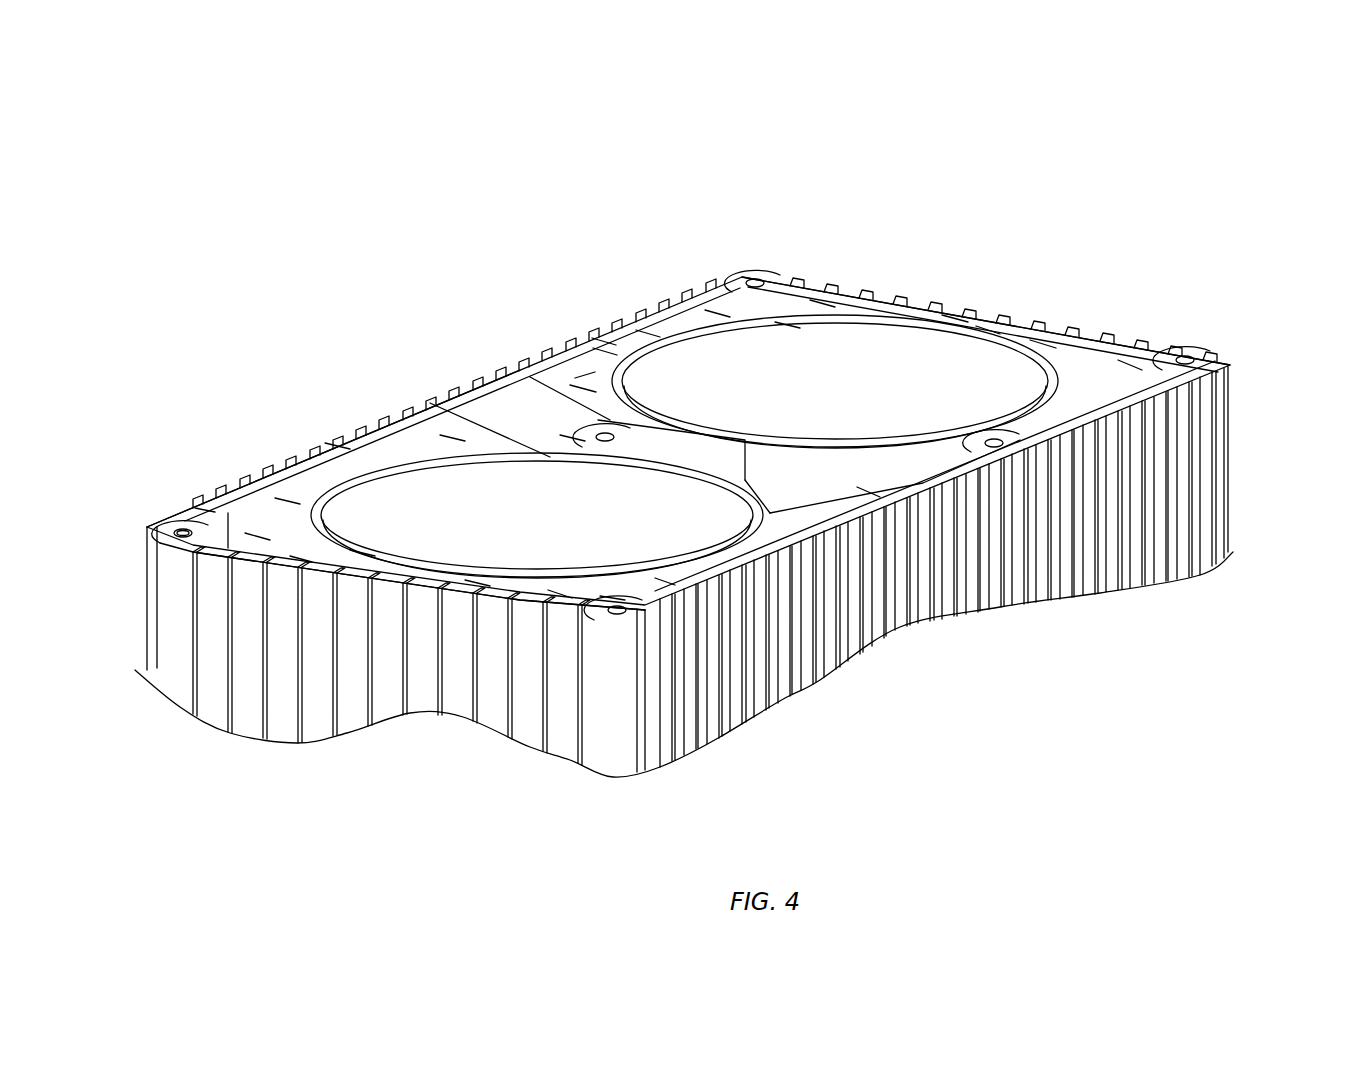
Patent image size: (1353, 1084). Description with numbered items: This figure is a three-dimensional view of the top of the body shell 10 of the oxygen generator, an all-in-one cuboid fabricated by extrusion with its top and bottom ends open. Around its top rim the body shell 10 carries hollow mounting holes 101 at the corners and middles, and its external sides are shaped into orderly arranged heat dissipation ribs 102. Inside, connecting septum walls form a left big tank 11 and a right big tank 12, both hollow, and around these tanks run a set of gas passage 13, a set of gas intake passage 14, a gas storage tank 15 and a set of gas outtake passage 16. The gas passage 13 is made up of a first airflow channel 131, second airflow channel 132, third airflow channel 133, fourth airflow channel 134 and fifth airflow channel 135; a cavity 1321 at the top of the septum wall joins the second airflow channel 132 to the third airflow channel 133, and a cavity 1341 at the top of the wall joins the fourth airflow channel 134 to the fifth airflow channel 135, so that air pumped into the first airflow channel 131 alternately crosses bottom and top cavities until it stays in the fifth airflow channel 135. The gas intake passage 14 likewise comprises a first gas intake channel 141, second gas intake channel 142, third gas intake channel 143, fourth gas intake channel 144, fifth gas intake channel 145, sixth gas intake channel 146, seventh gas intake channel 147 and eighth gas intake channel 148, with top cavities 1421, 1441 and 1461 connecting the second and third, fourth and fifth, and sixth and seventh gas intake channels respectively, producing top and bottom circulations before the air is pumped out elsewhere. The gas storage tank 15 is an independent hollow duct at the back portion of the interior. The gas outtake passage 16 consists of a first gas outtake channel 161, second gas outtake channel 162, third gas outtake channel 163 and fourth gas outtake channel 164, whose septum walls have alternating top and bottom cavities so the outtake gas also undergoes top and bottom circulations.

The body shell 10 is at (1238, 482).
The left big tank 11 is at (680, 540).
The right big tank 12 is at (968, 408).
The gas passage 13 is at (640, 852).
The gas intake passage 14 is at (533, 168).
The gas storage tank 15 is at (857, 485).
The gas outtake passage 16 is at (238, 382).
The mounting hole 101 is at (185, 525).
The heat dissipation rib 102 is at (203, 507).
The first airflow channel 131 is at (663, 577).
The second airflow channel 132 is at (617, 597).
The cavity 1321 is at (560, 595).
The third airflow channel 133 is at (477, 583).
The fourth airflow channel 134 is at (363, 553).
The cavity 1341 is at (300, 560).
The fifth airflow channel 135 is at (258, 537).
The first gas intake channel 141 is at (1130, 365).
The second gas intake channel 142 is at (1043, 343).
The cavity 1421 is at (988, 330).
The third gas intake channel 143 is at (955, 318).
The fourth gas intake channel 144 is at (822, 303).
The cavity 1441 is at (787, 325).
The fifth gas intake channel 145 is at (717, 313).
The sixth gas intake channel 146 is at (648, 333).
The cavity 1461 is at (604, 340).
The seventh gas intake channel 147 is at (605, 350).
The eighth gas intake channel 148 is at (583, 388).
The first gas outtake channel 161 is at (572, 437).
The second gas outtake channel 162 is at (453, 437).
The third gas outtake channel 163 is at (338, 445).
The fourth gas outtake channel 164 is at (287, 500).